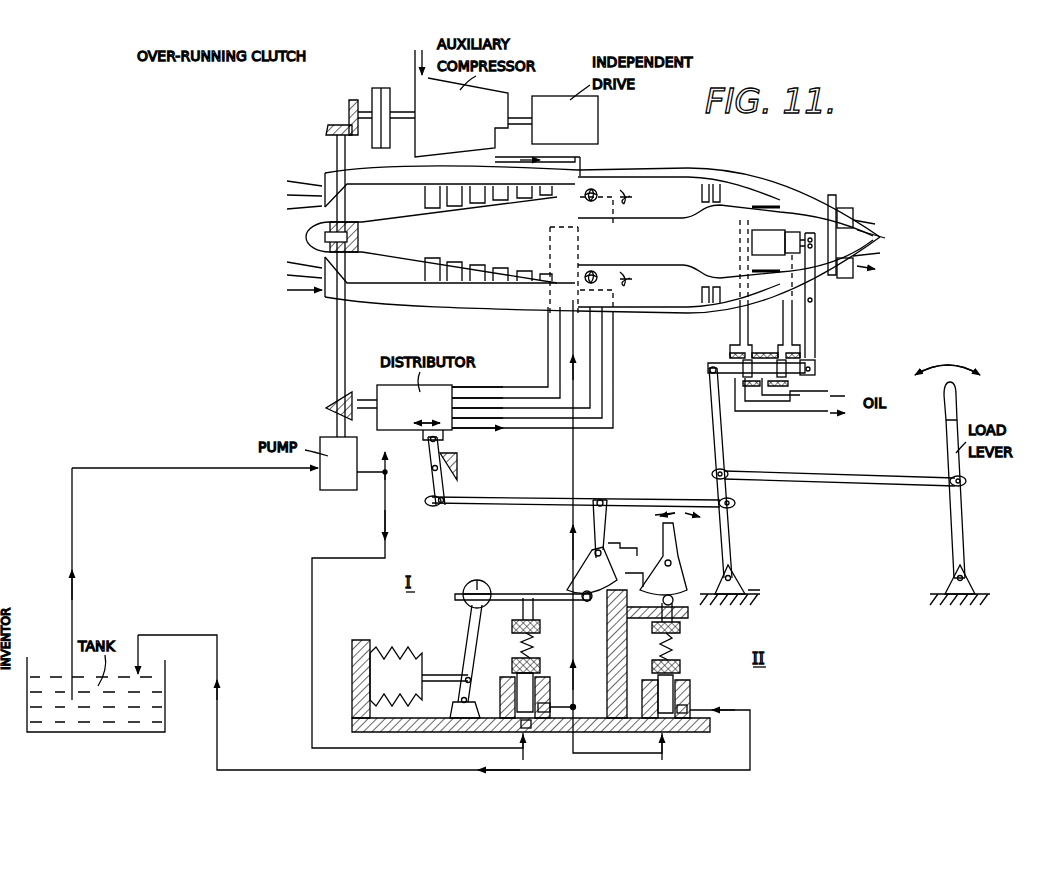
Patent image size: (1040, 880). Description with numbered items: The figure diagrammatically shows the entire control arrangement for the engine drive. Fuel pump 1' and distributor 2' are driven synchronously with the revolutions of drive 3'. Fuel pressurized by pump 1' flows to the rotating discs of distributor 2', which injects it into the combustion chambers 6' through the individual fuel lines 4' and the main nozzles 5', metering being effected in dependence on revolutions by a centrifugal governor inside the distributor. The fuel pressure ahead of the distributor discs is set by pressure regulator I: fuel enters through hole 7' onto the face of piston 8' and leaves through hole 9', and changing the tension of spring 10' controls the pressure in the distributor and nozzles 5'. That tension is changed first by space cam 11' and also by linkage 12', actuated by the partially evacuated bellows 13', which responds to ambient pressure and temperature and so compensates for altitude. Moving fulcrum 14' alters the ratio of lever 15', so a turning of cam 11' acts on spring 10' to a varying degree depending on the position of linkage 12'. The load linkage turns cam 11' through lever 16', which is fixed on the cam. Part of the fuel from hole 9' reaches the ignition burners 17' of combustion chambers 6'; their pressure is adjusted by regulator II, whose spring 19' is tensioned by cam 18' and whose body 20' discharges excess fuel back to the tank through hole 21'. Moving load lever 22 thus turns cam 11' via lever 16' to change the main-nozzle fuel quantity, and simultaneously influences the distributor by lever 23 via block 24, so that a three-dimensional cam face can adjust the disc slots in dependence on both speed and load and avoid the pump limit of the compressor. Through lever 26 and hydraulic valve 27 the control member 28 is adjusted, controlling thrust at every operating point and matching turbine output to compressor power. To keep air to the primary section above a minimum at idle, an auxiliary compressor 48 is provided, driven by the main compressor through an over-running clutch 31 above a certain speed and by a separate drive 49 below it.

The over-running clutch 31 is at (380, 92).
The auxiliary compressor 48 is at (494, 108).
The separate drive 49 is at (598, 118).
The drive 3' is at (537, 154).
The ignition burners 17' is at (605, 212).
The main nozzles 5' is at (639, 239).
The combustion chambers 6' is at (725, 239).
The control member 28 is at (828, 230).
The individual fuel lines 4' is at (528, 266).
The hydraulic valve 27 is at (815, 354).
The lever 26 is at (722, 435).
The block 24 is at (447, 437).
The lever 23 is at (428, 487).
The load lever 22 is at (963, 520).
The distributor 2' is at (469, 368).
The fuel pump 1' is at (297, 598).
The lever 16' is at (613, 529).
The cam 18' is at (672, 564).
The space cam 11' is at (582, 570).
The moving fulcrum 14' is at (469, 585).
The lever 15' is at (523, 582).
The bellows 13' is at (410, 670).
The linkage 12' is at (459, 661).
The spring 10' is at (512, 635).
The piston 8' is at (529, 679).
The hole 9' is at (600, 530).
The hole 7' is at (536, 737).
The spring 19' is at (679, 638).
The valve body 20' is at (684, 690).
The hole 21' is at (701, 698).